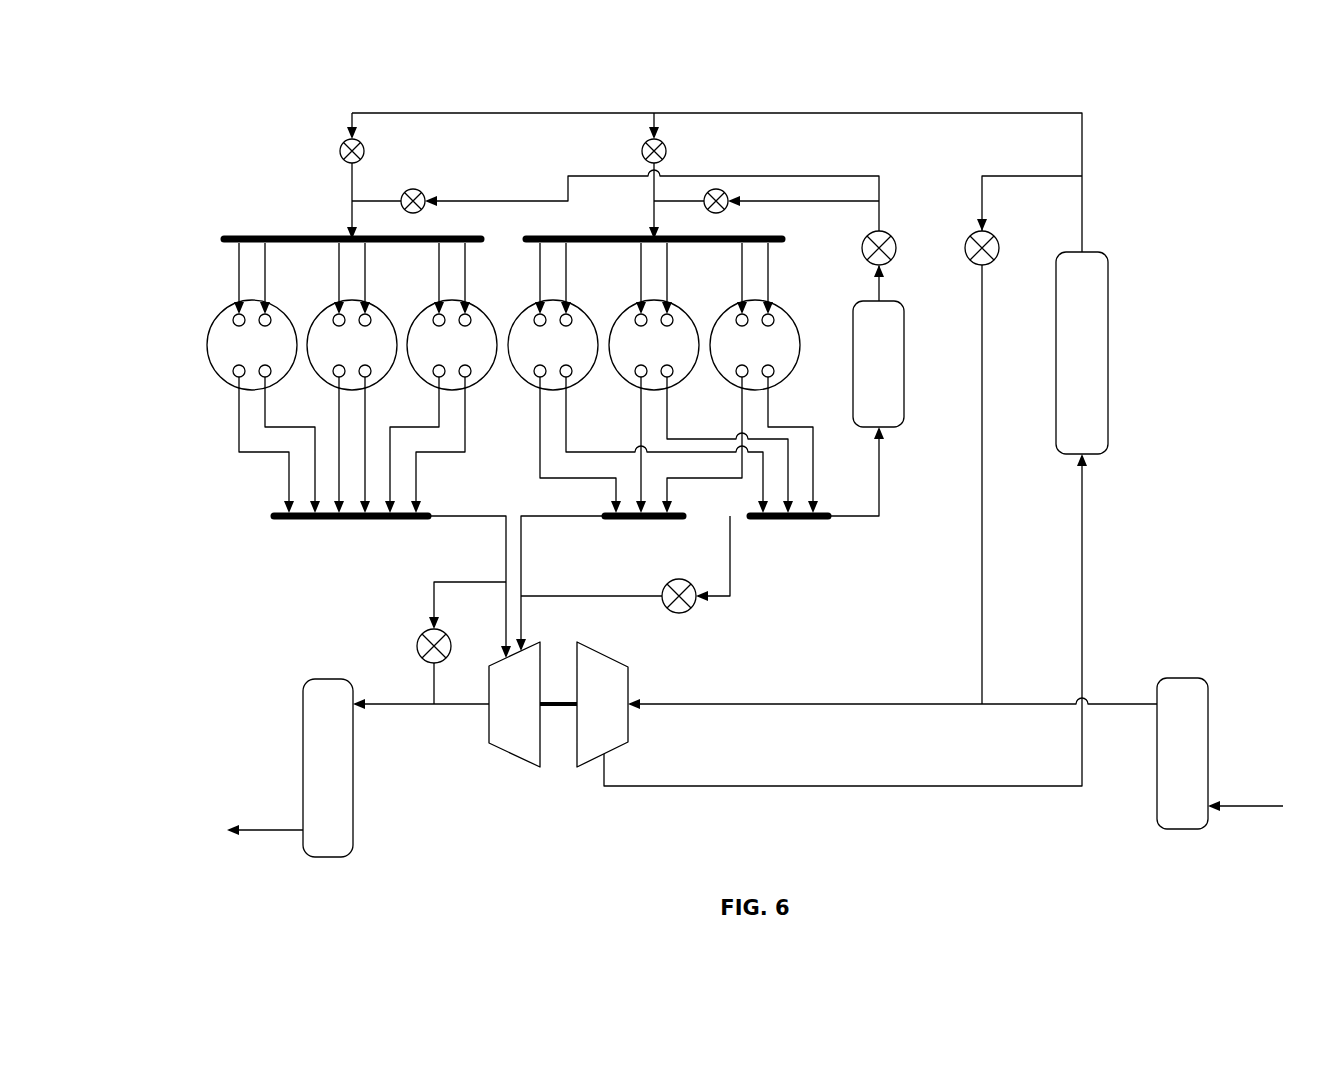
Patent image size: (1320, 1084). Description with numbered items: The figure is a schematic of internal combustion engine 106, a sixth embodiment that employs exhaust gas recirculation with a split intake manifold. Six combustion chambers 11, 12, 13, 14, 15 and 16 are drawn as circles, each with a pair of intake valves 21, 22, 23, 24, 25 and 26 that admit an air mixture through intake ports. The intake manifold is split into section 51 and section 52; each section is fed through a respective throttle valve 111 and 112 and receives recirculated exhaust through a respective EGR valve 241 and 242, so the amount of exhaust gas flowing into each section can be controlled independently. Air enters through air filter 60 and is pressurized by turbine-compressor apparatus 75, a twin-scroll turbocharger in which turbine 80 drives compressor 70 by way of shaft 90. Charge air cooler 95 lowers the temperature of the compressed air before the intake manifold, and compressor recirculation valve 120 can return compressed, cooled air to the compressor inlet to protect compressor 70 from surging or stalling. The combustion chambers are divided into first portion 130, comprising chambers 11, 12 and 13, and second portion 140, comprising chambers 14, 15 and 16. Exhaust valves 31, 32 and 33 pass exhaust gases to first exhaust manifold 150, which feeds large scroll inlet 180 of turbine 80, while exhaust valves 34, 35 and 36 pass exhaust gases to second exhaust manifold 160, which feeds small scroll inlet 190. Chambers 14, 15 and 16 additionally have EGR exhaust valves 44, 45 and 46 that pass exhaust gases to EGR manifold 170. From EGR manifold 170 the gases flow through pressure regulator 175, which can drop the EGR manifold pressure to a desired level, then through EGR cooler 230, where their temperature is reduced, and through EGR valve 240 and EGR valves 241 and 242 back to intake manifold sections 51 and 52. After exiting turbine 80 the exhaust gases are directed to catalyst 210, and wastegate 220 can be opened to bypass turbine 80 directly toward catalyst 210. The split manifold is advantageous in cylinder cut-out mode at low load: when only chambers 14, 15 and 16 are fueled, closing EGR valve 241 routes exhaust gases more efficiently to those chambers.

The engine 106 is at (166, 170).
The combustion chamber 11 is at (252, 345).
The combustion chamber 12 is at (352, 345).
The combustion chamber 13 is at (452, 345).
The combustion chamber 14 is at (553, 345).
The combustion chamber 15 is at (654, 345).
The combustion chamber 16 is at (755, 345).
The intake valves 21 is at (252, 314).
The intake valves 22 is at (352, 314).
The intake valves 23 is at (452, 314).
The intake valves 24 is at (552, 314).
The intake valves 25 is at (653, 314).
The intake valves 26 is at (754, 314).
The exhaust valves 31 is at (250, 380).
The exhaust valves 32 is at (350, 380).
The exhaust valves 33 is at (450, 380).
The exhaust valve 34 is at (535, 380).
The exhaust valve 35 is at (636, 380).
The exhaust valve 36 is at (737, 380).
The EGR exhaust valve 44 is at (571, 380).
The EGR exhaust valve 45 is at (672, 380).
The EGR exhaust valve 46 is at (773, 380).
The intake manifold section 51 is at (291, 235).
The intake manifold section 52 is at (604, 235).
The air filter 60 is at (1182, 753).
The compressor 70 is at (602, 704).
The turbine-compressor apparatus 75 is at (530, 830).
The turbine 80 is at (514, 704).
The shaft 90 is at (558, 709).
The charge air cooler 95 is at (1082, 353).
The throttle valve 111 is at (365, 148).
The throttle valve 112 is at (667, 148).
The compressor recirculation valve 120 is at (965, 256).
The first portion 130 is at (482, 452).
The second portion 140 is at (528, 426).
The first exhaust manifold 150 is at (306, 521).
The second exhaust manifold 160 is at (634, 521).
The EGR manifold 170 is at (785, 521).
The pressure regulator 175 is at (679, 613).
The large scroll inlet 180 is at (502, 656).
The small scroll inlet 190 is at (546, 656).
The catalyst 210 is at (328, 768).
The wastegate 220 is at (417, 644).
The EGR cooler 230 is at (878, 364).
The EGR valve 240 is at (862, 252).
The EGR valve 241 is at (423, 192).
The EGR valve 242 is at (727, 194).